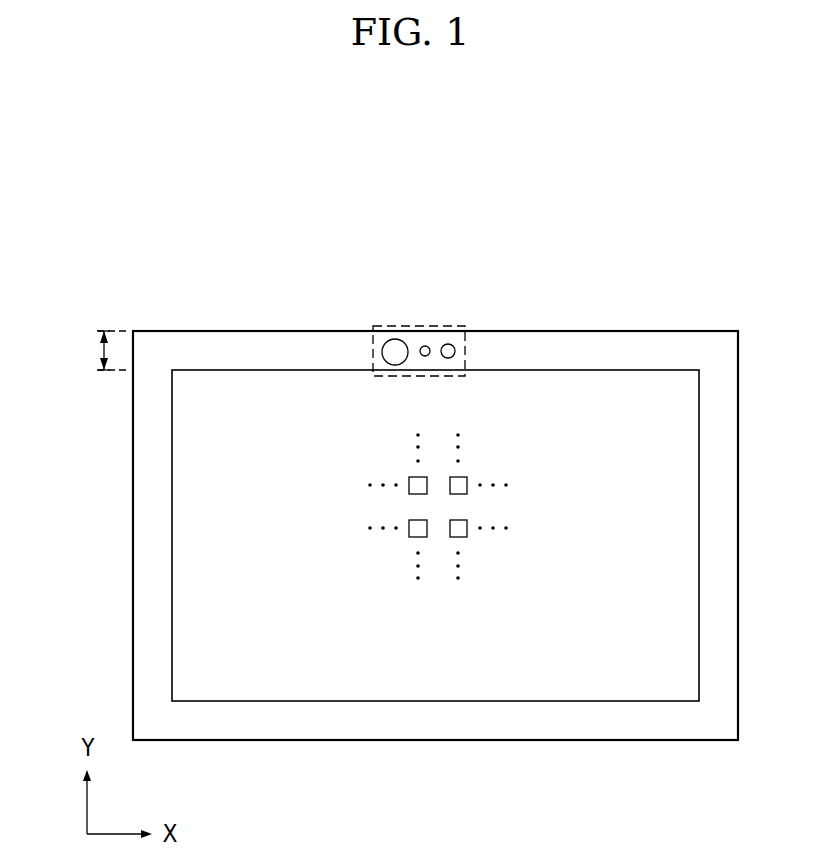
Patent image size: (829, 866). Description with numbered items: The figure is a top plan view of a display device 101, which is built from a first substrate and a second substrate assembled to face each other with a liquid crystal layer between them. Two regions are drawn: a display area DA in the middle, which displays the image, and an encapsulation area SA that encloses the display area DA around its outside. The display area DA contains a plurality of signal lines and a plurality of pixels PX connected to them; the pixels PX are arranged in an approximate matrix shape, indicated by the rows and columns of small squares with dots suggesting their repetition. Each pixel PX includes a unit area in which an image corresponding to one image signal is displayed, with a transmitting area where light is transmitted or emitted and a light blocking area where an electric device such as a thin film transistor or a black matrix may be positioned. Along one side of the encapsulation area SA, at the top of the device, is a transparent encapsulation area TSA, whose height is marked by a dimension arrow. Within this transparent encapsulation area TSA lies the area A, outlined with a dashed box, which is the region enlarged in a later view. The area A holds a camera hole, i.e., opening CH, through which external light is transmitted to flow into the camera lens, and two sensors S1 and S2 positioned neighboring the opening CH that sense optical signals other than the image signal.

The display device 101 is at (392, 242).
The area A is at (366, 311).
The camera hole (opening) CH is at (394, 339).
The sensor S1 is at (425, 346).
The sensor S2 is at (451, 344).
The pixel PX is at (467, 478).
The transparent encapsulation area TSA is at (91, 350).
The encapsulation area SA is at (147, 507).
The display area DA is at (190, 556).